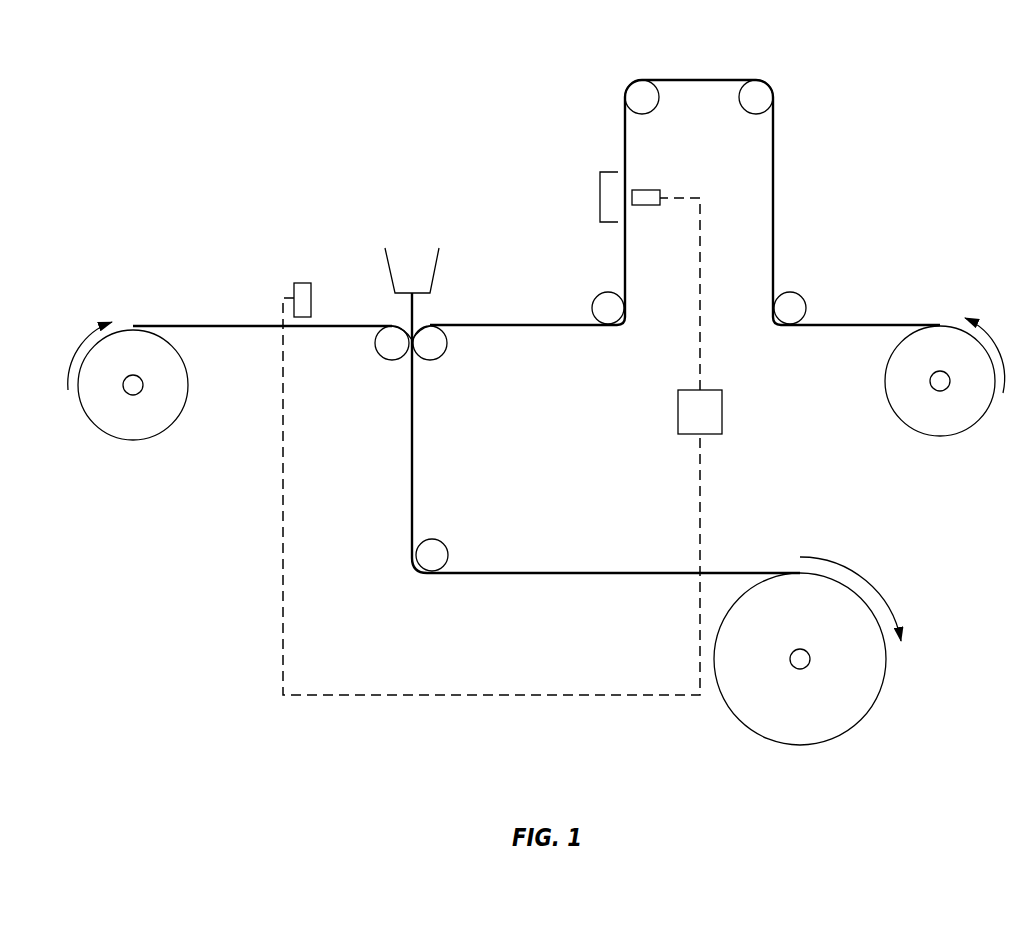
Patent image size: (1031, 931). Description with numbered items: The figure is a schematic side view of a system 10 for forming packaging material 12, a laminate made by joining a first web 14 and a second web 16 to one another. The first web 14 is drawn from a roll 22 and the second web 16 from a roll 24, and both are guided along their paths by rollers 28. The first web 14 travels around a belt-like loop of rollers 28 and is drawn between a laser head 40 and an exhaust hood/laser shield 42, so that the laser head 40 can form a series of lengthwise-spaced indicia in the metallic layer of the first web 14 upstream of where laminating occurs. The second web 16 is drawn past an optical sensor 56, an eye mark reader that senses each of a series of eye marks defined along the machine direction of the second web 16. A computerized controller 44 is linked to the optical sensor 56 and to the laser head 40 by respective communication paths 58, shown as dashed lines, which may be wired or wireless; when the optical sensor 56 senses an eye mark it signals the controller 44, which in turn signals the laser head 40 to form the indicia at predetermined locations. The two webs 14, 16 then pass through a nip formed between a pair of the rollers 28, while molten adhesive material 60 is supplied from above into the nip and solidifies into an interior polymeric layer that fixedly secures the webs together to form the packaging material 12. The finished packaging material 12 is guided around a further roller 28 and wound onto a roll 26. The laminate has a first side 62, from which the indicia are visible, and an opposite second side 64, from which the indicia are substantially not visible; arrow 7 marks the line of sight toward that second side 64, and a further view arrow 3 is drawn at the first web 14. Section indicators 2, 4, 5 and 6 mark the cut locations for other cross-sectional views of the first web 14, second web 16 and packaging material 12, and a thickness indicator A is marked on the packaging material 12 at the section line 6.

The system 10 is at (928, 143).
The packaging material 12 is at (680, 585).
The first web 14 is at (781, 202).
The second web 16 is at (196, 322).
The roll 22 is at (899, 420).
The roll 24 is at (130, 441).
The roll 26 is at (876, 699).
The rollers 28 is at (655, 110).
The laser head 40 is at (652, 206).
The exhaust hood/laser shield 42 is at (600, 193).
The computerized controller 44 is at (722, 405).
The optical sensor 56 is at (302, 283).
The communication paths 58 is at (286, 542).
The adhesive material 60 is at (409, 316).
The first side 62 is at (755, 559).
The second side 64 is at (482, 586).
The section line 2- 2 is at (712, 73).
The view direction 3 is at (651, 275).
The section line 4- 4 is at (525, 315).
The section line 5- 5 is at (257, 315).
The section line 6- 6 is at (593, 557).
The arrow 7 is at (593, 575).
The thickness dimension A is at (593, 573).